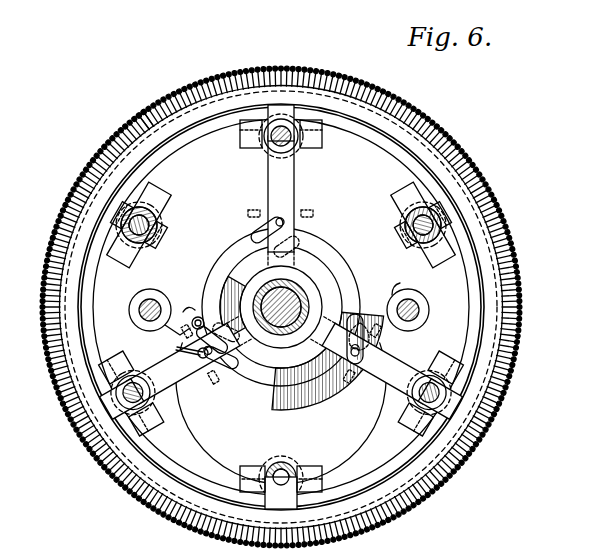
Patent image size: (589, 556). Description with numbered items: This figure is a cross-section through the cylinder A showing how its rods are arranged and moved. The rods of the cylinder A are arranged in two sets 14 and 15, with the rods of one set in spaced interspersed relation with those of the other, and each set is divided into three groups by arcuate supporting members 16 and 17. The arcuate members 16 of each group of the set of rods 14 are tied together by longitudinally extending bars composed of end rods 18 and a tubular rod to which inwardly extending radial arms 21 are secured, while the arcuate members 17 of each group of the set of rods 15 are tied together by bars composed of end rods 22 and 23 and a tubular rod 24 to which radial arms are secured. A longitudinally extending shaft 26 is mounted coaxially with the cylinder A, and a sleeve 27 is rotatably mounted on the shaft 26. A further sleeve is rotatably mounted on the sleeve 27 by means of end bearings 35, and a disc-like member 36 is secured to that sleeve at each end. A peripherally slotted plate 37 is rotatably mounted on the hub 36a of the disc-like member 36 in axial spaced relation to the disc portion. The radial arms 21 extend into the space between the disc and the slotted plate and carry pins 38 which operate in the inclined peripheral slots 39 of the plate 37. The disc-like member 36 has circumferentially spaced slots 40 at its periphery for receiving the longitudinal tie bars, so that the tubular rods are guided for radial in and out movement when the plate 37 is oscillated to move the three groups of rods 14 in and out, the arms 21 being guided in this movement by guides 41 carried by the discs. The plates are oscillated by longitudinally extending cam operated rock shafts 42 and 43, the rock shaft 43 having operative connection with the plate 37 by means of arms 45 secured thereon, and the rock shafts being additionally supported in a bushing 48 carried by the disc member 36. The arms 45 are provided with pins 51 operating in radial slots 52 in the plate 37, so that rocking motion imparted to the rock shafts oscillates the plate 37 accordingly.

The set of rods 14 is at (118, 124).
The set of rods 15 is at (148, 104).
The arcuate supporting member 16 is at (183, 124).
The arcuate supporting member 17 is at (345, 126).
The end rod 18 is at (272, 146).
The radial arm 21 is at (294, 176).
The end rod 22 is at (156, 226).
The end rod 23 is at (288, 474).
The tubular rod 24 is at (155, 232).
The shaft 26 is at (302, 287).
The sleeve 27 is at (318, 262).
The end bearing 35 is at (256, 294).
The disc-like member 36 is at (502, 331).
The hub 36a is at (250, 236).
The peripherally slotted plate 37 is at (272, 411).
The pin 38 is at (284, 220).
The inclined peripheral slot 39 is at (262, 220).
The circumferentially spaced slot 40 is at (269, 162).
The guide 41 is at (252, 213).
The rock shaft 42 is at (420, 310).
The rock shaft 43 is at (129, 308).
The arm 45 is at (208, 326).
The bushing 48 is at (405, 290).
The pin 51 is at (190, 305).
The radial slot 52 is at (199, 317).
The cylinder A is at (543, 297).